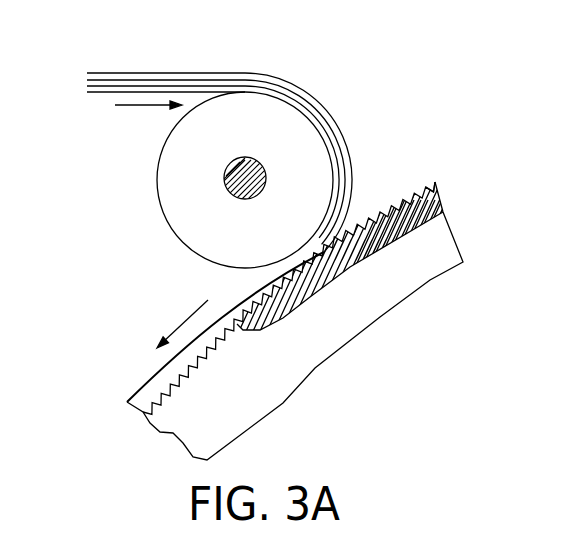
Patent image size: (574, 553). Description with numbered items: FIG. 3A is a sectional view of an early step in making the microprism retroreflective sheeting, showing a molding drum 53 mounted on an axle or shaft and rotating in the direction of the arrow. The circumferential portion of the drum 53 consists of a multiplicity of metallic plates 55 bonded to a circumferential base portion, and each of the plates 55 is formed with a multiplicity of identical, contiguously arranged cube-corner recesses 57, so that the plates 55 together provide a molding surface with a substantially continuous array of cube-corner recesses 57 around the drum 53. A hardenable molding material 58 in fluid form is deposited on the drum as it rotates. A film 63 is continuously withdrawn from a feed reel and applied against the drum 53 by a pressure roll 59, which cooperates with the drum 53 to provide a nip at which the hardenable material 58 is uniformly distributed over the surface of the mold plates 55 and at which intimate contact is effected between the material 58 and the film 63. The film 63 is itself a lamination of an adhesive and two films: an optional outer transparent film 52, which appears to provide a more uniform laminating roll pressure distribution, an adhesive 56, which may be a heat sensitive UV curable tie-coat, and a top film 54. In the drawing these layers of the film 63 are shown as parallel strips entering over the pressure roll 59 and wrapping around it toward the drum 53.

The outer transparent film 52 is at (103, 95).
The molding drum 53 is at (383, 291).
The top film 54 is at (147, 87).
The metallic plates 55 is at (442, 207).
The adhesive 56 is at (198, 72).
The cube-corner recesses 57 is at (412, 190).
The hardenable molding material 58 is at (435, 182).
The pressure roll 59 is at (298, 123).
The film 63 is at (192, 205).